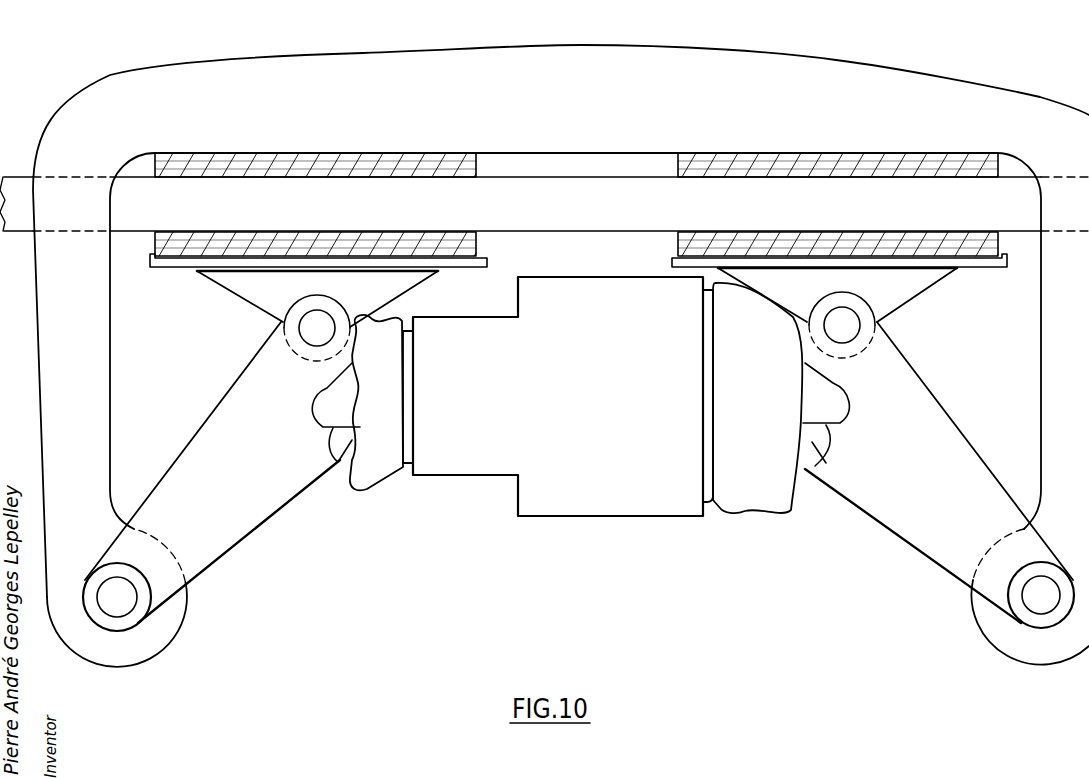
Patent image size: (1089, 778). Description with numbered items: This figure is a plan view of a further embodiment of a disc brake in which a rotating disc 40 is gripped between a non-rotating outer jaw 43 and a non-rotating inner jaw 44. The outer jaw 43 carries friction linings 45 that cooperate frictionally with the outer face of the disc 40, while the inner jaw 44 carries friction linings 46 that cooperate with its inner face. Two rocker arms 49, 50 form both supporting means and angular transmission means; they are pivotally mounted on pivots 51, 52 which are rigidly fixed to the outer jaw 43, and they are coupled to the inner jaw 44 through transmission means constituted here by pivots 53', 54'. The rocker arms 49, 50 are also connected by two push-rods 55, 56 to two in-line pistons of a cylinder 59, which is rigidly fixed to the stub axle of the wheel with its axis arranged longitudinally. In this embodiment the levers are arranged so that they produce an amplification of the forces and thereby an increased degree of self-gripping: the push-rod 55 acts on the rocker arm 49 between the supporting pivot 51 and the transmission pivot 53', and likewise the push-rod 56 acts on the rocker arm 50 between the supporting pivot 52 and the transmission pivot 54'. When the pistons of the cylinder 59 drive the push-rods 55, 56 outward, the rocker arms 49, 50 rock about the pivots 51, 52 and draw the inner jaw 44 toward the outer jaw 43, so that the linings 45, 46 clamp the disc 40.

The brake disc 40 is at (571, 190).
The outer jaw 43 is at (255, 78).
The inner jaw 44 is at (474, 262).
The friction linings 45 is at (316, 161).
The friction linings 46 is at (262, 242).
The rocker arm 49 is at (209, 426).
The rocker arm 50 is at (945, 421).
The pivot 51 is at (134, 608).
The pivot 52 is at (1023, 587).
The pivot 53' is at (288, 328).
The pivot 54' is at (868, 325).
The push-rod 55 is at (342, 418).
The push-rod 56 is at (817, 413).
The cylinder 59 is at (615, 517).